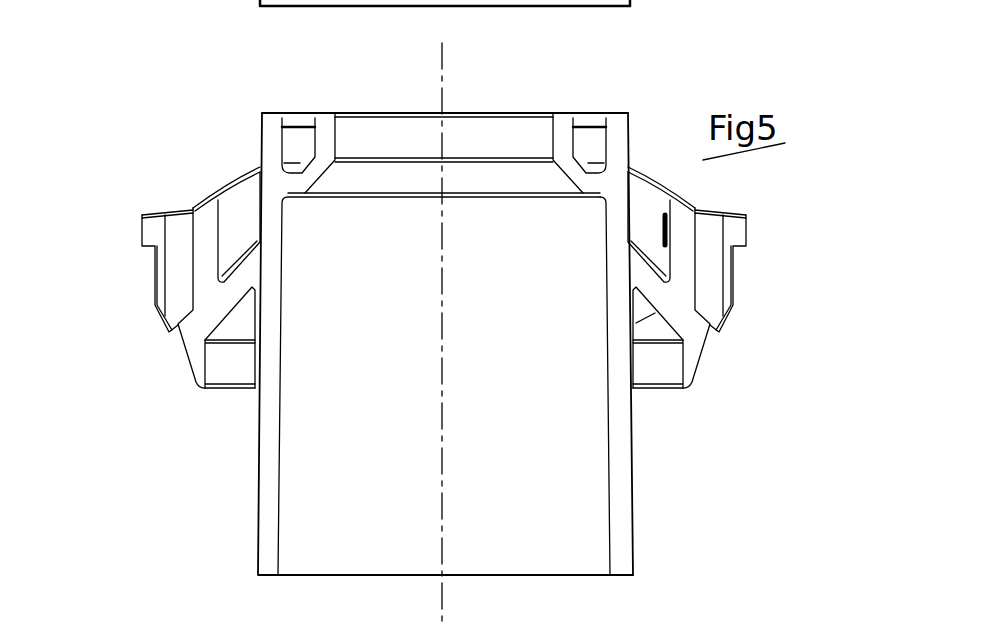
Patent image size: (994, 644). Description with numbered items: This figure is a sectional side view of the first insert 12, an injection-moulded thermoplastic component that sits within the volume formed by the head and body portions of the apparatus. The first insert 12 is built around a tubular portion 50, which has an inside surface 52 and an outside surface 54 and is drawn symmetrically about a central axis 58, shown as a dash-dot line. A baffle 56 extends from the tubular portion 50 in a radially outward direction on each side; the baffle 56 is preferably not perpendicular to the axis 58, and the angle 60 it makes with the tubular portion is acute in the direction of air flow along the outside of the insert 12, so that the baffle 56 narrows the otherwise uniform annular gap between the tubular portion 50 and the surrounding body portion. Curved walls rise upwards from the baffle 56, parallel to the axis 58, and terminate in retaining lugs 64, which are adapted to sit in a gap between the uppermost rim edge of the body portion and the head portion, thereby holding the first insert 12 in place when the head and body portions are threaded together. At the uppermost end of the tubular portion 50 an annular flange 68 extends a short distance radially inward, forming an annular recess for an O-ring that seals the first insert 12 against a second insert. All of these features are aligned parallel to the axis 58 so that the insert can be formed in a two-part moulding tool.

The first insert 12 is at (204, 27).
The tubular portion 50 is at (267, 518).
The inside surface 52 is at (280, 440).
The outside surface 54 is at (635, 470).
The baffle 56 is at (212, 317).
The axis 58 is at (438, 87).
The angle 60 is at (664, 321).
The lug 64 is at (150, 232).
The annular flange 68 is at (558, 138).